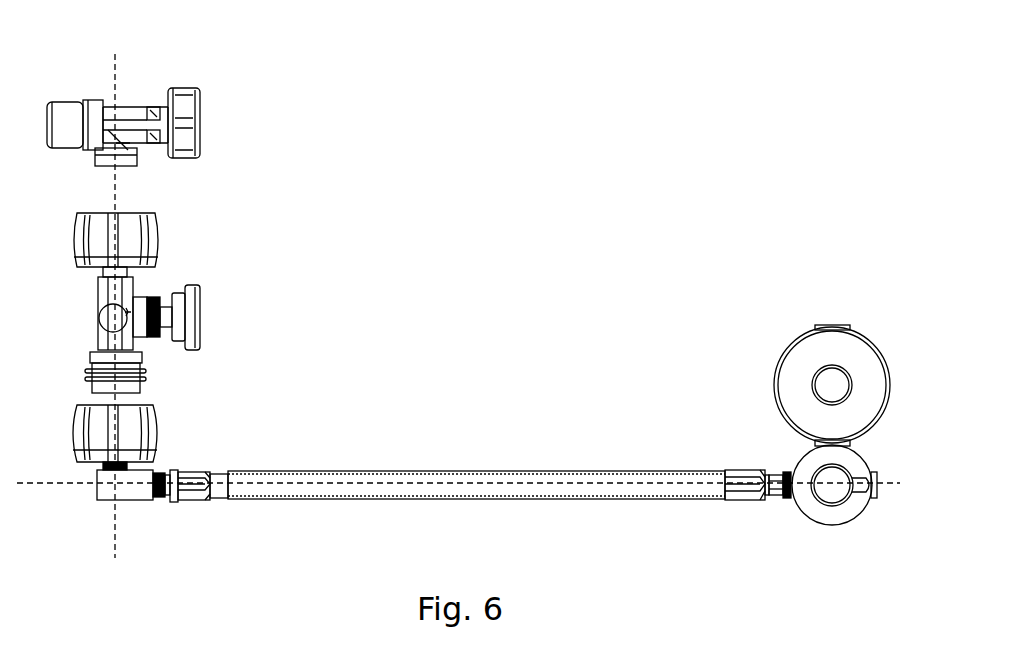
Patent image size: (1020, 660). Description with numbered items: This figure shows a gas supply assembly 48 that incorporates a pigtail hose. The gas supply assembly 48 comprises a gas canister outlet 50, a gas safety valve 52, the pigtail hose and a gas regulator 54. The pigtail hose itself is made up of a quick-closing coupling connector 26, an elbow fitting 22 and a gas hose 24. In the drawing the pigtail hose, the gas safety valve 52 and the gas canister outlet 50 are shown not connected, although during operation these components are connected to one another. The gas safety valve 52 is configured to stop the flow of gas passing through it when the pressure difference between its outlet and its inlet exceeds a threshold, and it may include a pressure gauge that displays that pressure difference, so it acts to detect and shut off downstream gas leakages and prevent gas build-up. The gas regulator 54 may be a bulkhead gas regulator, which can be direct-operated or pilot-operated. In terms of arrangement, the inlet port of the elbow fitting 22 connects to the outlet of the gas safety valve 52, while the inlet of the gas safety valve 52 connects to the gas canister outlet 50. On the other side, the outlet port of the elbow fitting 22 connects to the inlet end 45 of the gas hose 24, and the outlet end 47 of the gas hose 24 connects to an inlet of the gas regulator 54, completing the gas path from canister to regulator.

The elbow fitting 22 is at (98, 495).
The gas hose 24 is at (587, 470).
The QCC-1 connector 26 is at (145, 418).
The inlet end 45 is at (185, 468).
The outlet end 47 is at (753, 470).
The gas supply assembly 48 is at (735, 142).
The gas canister outlet 50 is at (135, 152).
The gas safety valve 52 is at (175, 313).
The gas regulator 54 is at (808, 330).